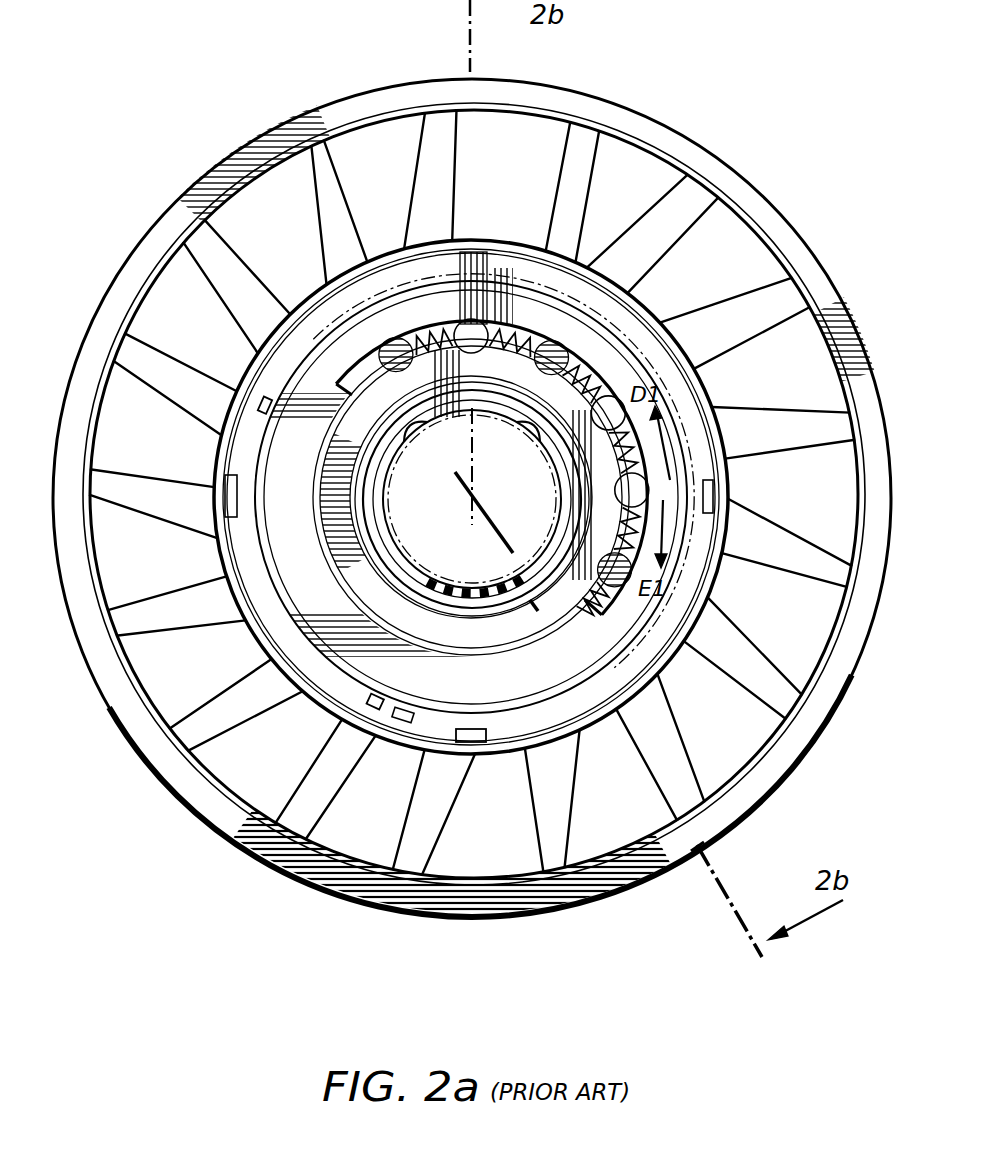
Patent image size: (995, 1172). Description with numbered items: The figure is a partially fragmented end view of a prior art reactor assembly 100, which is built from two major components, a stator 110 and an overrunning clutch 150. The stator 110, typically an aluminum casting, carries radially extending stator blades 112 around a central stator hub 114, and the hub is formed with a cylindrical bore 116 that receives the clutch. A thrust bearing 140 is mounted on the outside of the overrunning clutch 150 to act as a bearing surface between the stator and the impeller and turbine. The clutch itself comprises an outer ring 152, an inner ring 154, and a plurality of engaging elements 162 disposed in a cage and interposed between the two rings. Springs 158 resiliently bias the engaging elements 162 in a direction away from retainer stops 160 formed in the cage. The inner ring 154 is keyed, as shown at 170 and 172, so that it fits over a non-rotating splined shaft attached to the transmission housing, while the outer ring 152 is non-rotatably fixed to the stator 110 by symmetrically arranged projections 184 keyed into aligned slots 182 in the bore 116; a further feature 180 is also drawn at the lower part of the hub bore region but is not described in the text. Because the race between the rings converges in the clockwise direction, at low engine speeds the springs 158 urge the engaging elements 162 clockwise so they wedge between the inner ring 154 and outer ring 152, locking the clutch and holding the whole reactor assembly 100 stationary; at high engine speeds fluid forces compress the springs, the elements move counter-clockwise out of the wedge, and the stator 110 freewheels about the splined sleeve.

The reactor assembly 100 is at (158, 805).
The stator 110 is at (193, 190).
The stator blades 112 is at (318, 183).
The stator hub 114 is at (655, 308).
The cylindrical bore 116 is at (557, 276).
The thrust bearing 140 is at (578, 678).
The overrunning clutch 150 is at (467, 302).
The outer ring 152 is at (670, 413).
The inner ring 154 is at (440, 410).
The springs 158 is at (613, 373).
The retainer stops 160 is at (572, 367).
The engaging elements 162 is at (548, 356).
The key 170 is at (500, 580).
The key 172 is at (402, 458).
The tab 180 is at (400, 712).
The slots 182 is at (726, 492).
The projections 184 is at (482, 728).